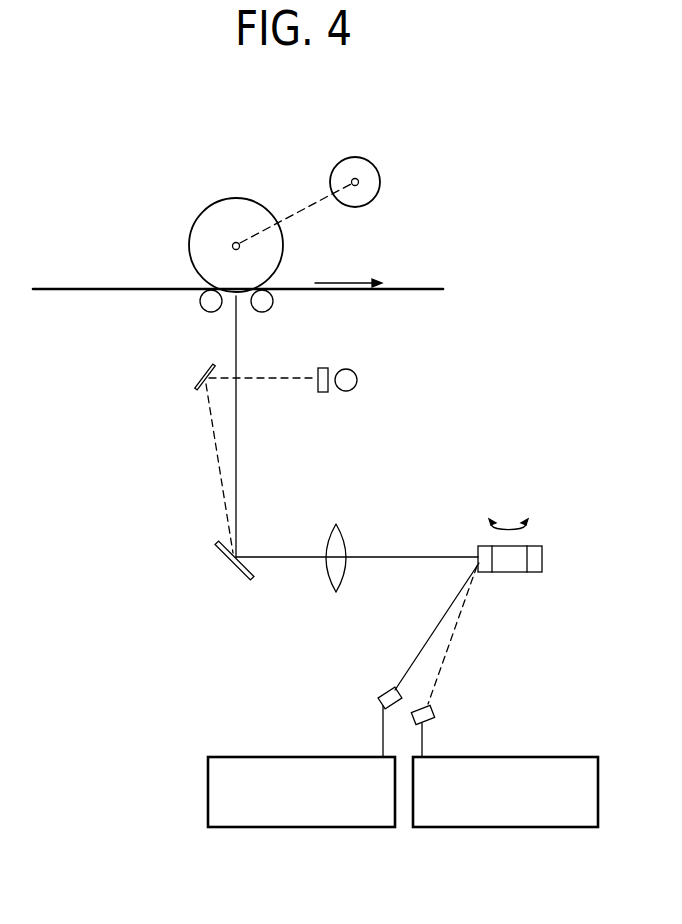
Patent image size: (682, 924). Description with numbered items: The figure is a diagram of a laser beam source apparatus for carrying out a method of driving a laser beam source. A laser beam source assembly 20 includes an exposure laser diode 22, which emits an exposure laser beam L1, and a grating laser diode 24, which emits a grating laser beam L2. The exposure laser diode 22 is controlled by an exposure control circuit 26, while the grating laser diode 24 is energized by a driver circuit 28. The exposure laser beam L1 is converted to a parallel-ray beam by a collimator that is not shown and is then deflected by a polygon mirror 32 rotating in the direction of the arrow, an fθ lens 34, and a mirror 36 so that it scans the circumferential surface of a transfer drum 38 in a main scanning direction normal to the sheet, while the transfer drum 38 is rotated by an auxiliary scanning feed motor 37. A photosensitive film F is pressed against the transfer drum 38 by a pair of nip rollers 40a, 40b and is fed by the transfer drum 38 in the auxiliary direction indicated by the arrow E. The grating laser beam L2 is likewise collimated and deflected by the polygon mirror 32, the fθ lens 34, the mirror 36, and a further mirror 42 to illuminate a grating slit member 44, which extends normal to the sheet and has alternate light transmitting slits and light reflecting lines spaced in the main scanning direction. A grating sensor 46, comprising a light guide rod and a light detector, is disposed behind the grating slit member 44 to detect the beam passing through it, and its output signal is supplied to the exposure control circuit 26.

The laser beam source assembly 20 is at (283, 153).
The exposure laser diode 22 is at (378, 692).
The grating laser diode 24 is at (434, 714).
The exposure control circuit 26 is at (315, 757).
The driver circuit 28 is at (500, 757).
The polygon mirror 32 is at (535, 545).
The fθ lens 34 is at (340, 540).
The mirror 36 is at (215, 546).
The auxiliary scanning feed motor 37 is at (373, 160).
The transfer drum 38 is at (236, 197).
The nip roller 40a is at (206, 308).
The nip roller 40b is at (266, 308).
The mirror 42 is at (200, 372).
The grating slit member 44 is at (328, 372).
The grating sensor 46 is at (358, 381).
The photosensitive film F is at (402, 289).
The auxiliary direction arrow E is at (348, 273).
The exposure laser beam L1 is at (432, 636).
The grating laser beam L2 is at (447, 650).